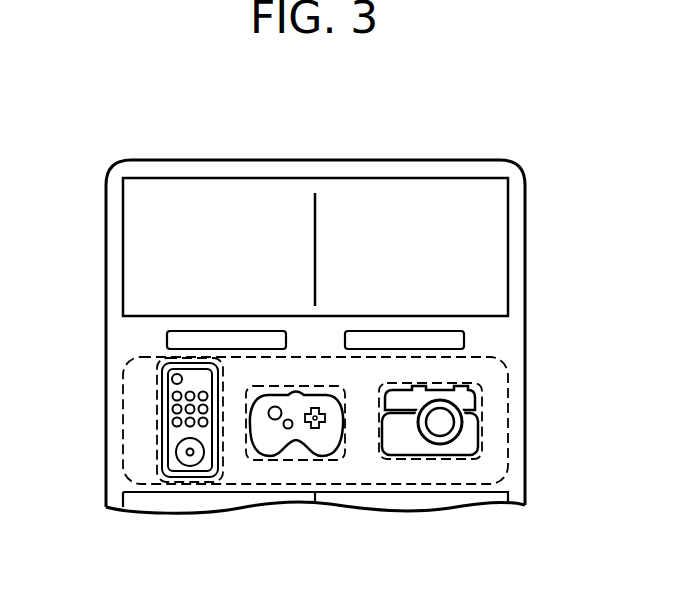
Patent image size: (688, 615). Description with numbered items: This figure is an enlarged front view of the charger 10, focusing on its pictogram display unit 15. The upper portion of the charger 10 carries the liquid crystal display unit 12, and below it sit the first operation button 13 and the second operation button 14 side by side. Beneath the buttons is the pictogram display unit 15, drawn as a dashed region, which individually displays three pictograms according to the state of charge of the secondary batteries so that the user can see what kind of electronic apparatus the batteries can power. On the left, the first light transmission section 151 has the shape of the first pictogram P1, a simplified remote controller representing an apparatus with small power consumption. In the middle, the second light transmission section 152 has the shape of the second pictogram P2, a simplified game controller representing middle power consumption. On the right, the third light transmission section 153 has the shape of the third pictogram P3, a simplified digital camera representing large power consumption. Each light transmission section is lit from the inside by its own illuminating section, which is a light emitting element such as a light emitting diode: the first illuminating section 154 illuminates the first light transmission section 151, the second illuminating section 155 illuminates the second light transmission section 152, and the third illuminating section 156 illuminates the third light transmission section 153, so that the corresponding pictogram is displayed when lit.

The charger 10 is at (221, 146).
The liquid crystal display unit 12 is at (498, 226).
The first operation button 13 is at (167, 344).
The second operation button 14 is at (458, 339).
The pictogram display unit 15 is at (123, 462).
The first light transmission section 151 is at (167, 387).
The second light transmission section 152 is at (330, 448).
The third light transmission section 153 is at (473, 400).
The first illuminating section 154 is at (160, 428).
The second illuminating section 155 is at (277, 460).
The third illuminating section 156 is at (483, 445).
The first pictogram P1 is at (163, 408).
The second pictogram P2 is at (303, 440).
The third pictogram P3 is at (480, 428).